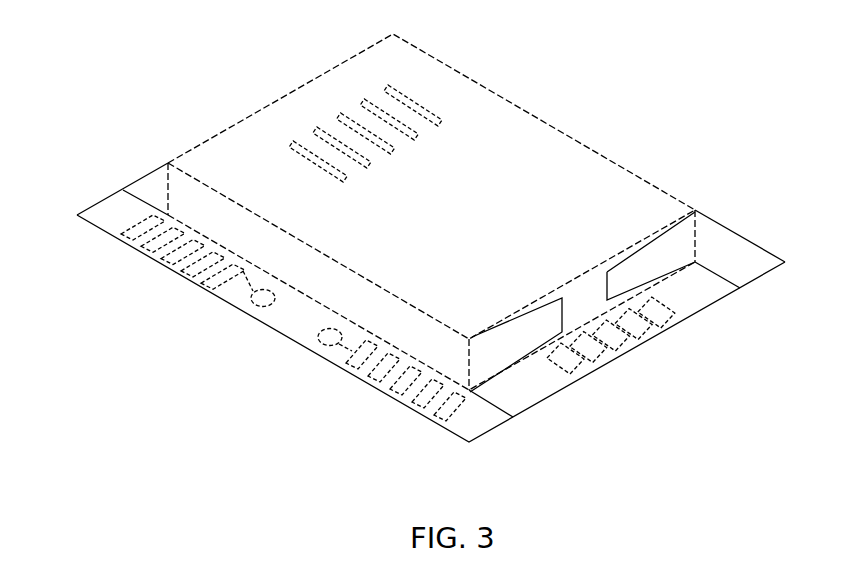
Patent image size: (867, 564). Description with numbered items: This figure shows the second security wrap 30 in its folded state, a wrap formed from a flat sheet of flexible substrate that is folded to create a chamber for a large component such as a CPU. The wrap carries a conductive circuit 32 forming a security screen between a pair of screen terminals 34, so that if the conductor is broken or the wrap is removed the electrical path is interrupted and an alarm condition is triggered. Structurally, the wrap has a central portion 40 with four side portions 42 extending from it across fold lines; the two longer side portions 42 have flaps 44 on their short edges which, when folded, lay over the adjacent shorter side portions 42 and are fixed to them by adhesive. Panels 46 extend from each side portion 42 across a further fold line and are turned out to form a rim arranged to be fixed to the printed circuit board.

The second security wrap 30 is at (218, 80).
The conductive circuit 32 is at (182, 275).
The screen terminals 34 is at (322, 337).
The central portion 40 is at (593, 200).
The side portions 42 is at (190, 203).
The flaps 44 is at (667, 257).
The panels 46 is at (470, 420).